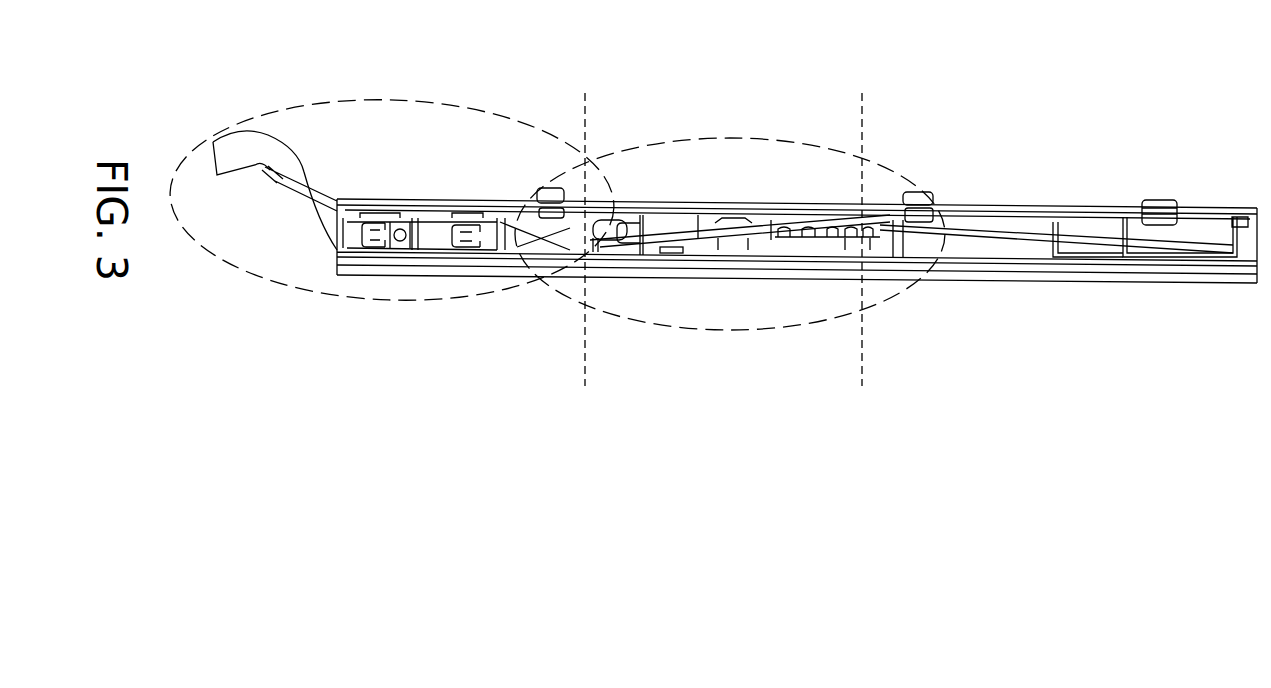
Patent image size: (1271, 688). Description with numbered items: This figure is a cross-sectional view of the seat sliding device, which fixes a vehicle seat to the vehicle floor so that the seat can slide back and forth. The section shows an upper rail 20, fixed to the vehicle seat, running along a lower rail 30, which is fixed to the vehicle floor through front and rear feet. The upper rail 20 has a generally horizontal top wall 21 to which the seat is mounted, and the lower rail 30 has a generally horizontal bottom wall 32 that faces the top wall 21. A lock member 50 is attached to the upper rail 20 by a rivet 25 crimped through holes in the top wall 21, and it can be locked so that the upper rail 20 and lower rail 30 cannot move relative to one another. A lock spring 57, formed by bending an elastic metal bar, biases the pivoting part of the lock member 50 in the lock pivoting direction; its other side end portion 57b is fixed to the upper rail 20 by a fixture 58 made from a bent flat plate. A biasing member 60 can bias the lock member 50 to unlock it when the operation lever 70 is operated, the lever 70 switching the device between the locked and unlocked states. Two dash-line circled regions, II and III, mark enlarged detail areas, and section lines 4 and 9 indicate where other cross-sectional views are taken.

The upper rail 20 is at (797, 248).
The top wall 21 is at (990, 205).
The rivet 25 is at (549, 185).
The lower rail 30 is at (950, 330).
The bottom wall 32 is at (1072, 283).
The lock member 50 is at (755, 222).
The lock spring 57 is at (1064, 245).
The other side end portion 57b is at (1236, 212).
The fixture 58 is at (1178, 210).
The biasing member 60 is at (425, 208).
The operation lever 70 is at (294, 133).
The detail region II is at (668, 141).
The detail region III is at (392, 102).
The section line 4 is at (883, 384).
The section line 9 is at (606, 384).